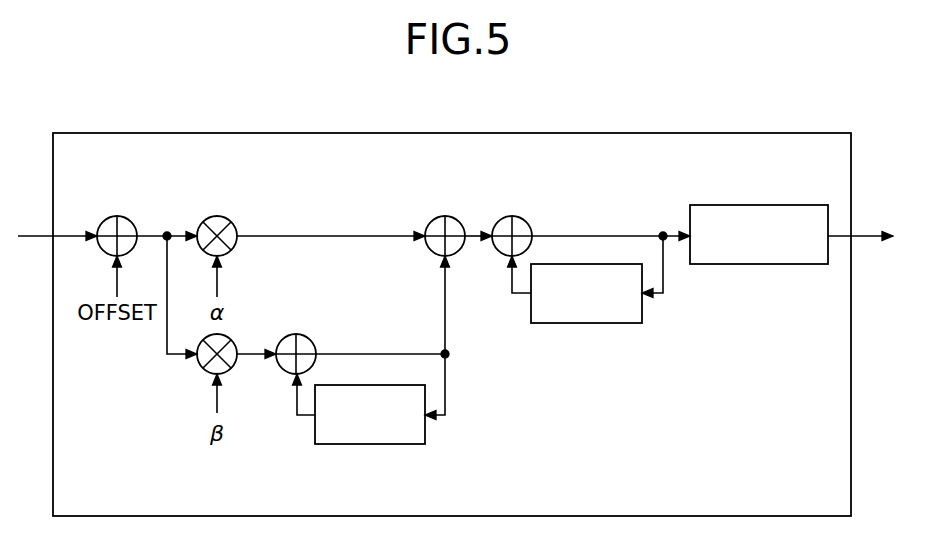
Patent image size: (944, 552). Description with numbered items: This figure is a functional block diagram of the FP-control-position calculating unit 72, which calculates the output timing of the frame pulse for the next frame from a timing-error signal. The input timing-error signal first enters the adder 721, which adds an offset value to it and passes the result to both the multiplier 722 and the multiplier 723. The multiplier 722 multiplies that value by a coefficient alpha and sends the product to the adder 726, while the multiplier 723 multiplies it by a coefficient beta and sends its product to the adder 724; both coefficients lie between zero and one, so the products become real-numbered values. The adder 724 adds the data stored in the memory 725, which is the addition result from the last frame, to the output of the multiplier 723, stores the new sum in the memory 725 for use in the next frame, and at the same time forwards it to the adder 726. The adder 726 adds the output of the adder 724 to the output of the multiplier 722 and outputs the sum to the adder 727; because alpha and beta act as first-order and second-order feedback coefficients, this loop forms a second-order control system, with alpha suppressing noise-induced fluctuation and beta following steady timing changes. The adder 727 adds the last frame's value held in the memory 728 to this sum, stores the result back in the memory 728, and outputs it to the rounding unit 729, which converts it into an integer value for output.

The FP-control-position calculating unit 72 is at (762, 133).
The adder 721 is at (121, 214).
The multiplier 722 is at (221, 214).
The multiplier 723 is at (206, 371).
The adder 724 is at (301, 334).
The memory 725 is at (372, 444).
The adder 726 is at (441, 215).
The adder 727 is at (515, 214).
The memory 728 is at (590, 323).
The rounding unit 729 is at (758, 205).